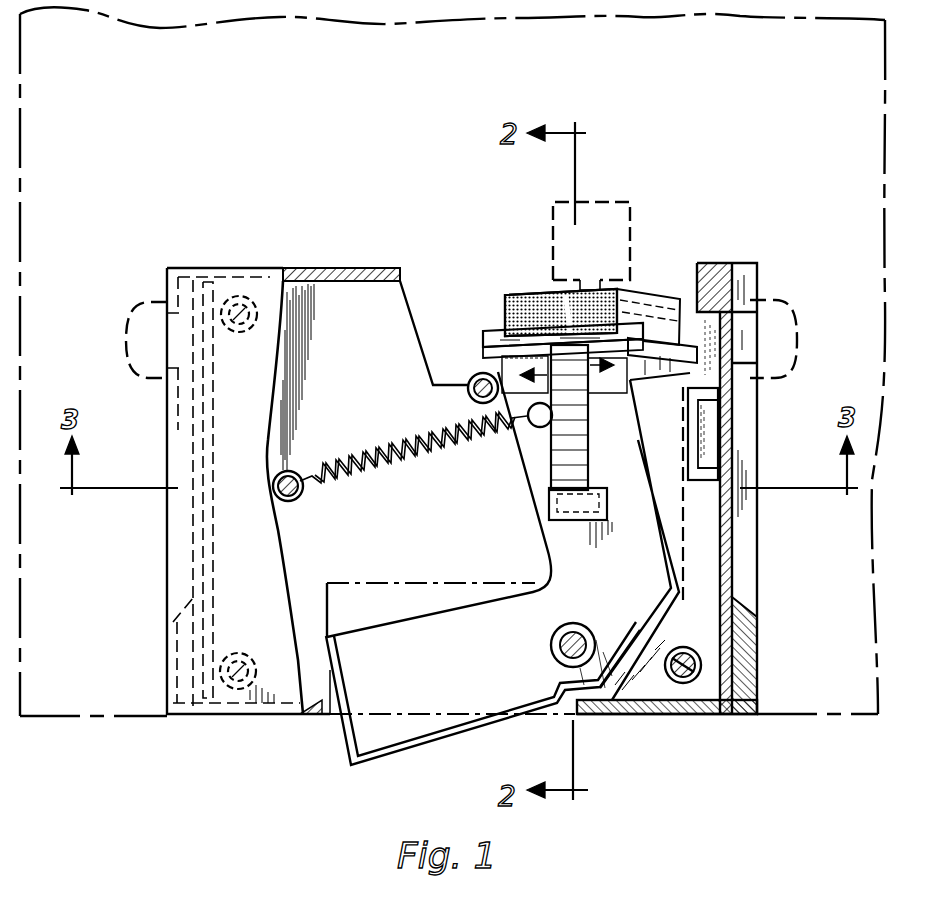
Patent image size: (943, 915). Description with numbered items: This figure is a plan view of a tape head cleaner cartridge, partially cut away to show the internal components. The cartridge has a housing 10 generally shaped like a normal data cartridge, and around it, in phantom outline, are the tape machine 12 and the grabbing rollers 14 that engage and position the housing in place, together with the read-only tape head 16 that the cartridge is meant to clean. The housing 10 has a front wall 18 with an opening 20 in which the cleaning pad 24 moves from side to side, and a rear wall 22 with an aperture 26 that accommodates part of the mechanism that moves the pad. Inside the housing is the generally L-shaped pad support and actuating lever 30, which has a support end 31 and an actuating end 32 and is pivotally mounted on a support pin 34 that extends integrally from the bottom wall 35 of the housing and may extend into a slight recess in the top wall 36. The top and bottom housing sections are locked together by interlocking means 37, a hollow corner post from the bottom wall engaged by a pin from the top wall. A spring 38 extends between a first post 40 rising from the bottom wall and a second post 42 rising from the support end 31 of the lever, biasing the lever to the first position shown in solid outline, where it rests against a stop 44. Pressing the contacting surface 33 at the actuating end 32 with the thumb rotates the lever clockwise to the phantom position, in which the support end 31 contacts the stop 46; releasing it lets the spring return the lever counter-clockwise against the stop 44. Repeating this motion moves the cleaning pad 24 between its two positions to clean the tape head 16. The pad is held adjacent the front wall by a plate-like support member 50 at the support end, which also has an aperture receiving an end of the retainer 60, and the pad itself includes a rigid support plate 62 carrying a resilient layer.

The housing 10 is at (333, 265).
The tape machine 12 is at (125, 718).
The grabbing rollers 14 is at (152, 298).
The read-only tape head 16 is at (632, 217).
The front wall 18 is at (378, 264).
The opening 20 is at (452, 274).
The rear wall 22 is at (668, 716).
The cleaning pad 24 is at (529, 294).
The aperture 26 is at (330, 716).
The pad support and actuating lever 30 is at (458, 716).
The support end 31 is at (650, 370).
The actuating end 32 is at (390, 732).
The contacting surface 33 is at (425, 742).
The support pin 34 is at (602, 708).
The bottom wall 35 is at (430, 537).
The top wall 36 is at (262, 590).
The interlocking means 37 is at (246, 302).
The spring 38 is at (406, 432).
The first post 40 is at (306, 500).
The second post 42 is at (532, 428).
The stop 44 is at (470, 375).
The stop 46 is at (681, 456).
The support member 50 is at (492, 325).
The retainer 60 is at (553, 454).
The rigid support plate 62 is at (622, 327).